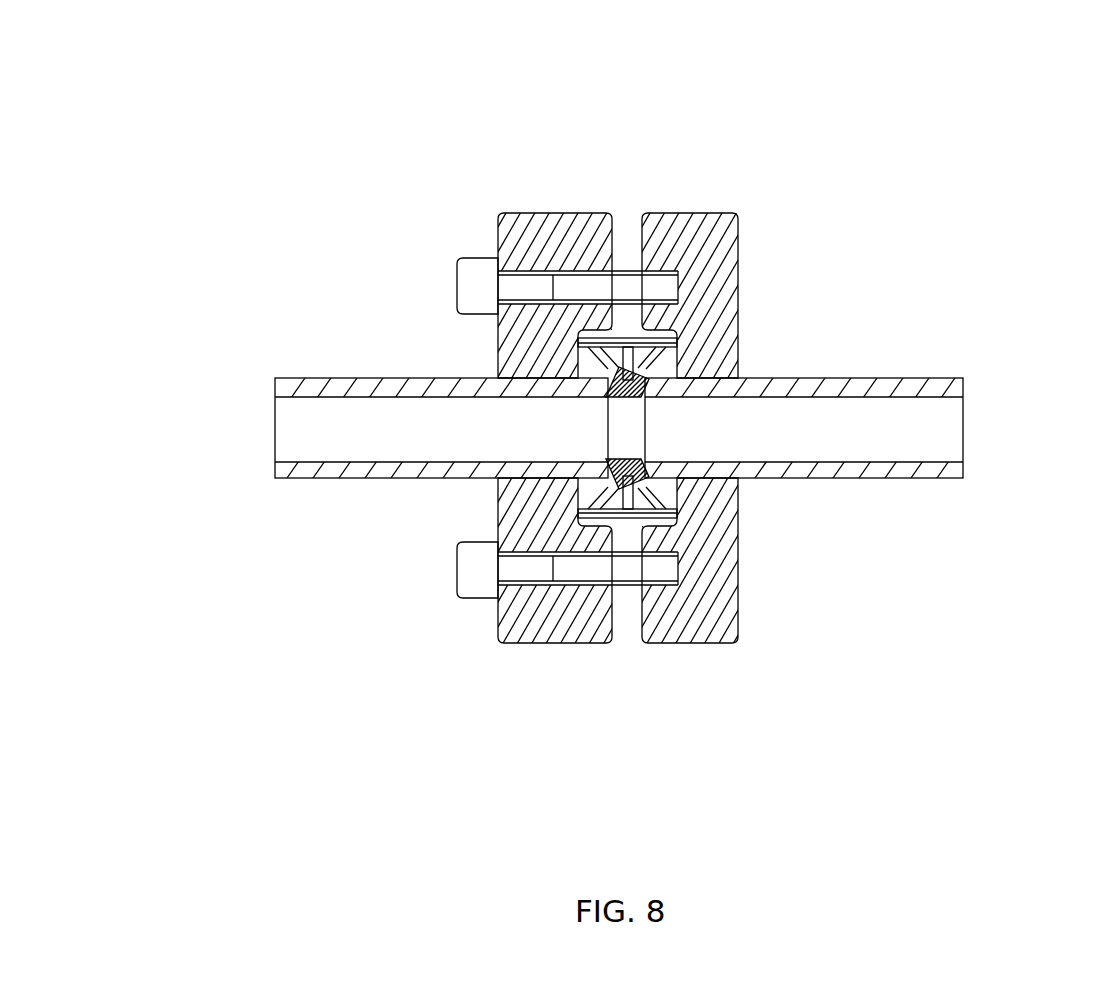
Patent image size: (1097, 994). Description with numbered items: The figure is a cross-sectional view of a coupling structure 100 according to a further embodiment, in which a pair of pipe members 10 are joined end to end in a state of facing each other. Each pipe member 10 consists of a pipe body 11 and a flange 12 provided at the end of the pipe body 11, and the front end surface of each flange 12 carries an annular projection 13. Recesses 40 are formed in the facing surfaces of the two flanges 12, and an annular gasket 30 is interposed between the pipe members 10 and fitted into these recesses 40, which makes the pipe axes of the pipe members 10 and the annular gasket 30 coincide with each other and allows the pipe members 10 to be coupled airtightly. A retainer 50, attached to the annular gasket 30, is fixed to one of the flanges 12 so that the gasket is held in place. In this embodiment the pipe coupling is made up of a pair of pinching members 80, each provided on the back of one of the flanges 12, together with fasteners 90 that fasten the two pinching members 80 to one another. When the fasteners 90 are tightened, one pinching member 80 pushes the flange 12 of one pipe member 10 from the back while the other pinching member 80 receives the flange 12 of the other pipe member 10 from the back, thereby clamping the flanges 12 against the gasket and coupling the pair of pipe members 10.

The coupling structure 100 is at (236, 120).
The pipe member 10 is at (250, 353).
The pipe body 11 is at (308, 478).
The flange 12 is at (590, 518).
The annular projection 13 is at (613, 377).
The annular gasket 30 is at (590, 370).
The recess 40 is at (610, 416).
The retainer 50 is at (633, 360).
The pinching member 80 is at (553, 213).
The fastener 90 is at (457, 288).